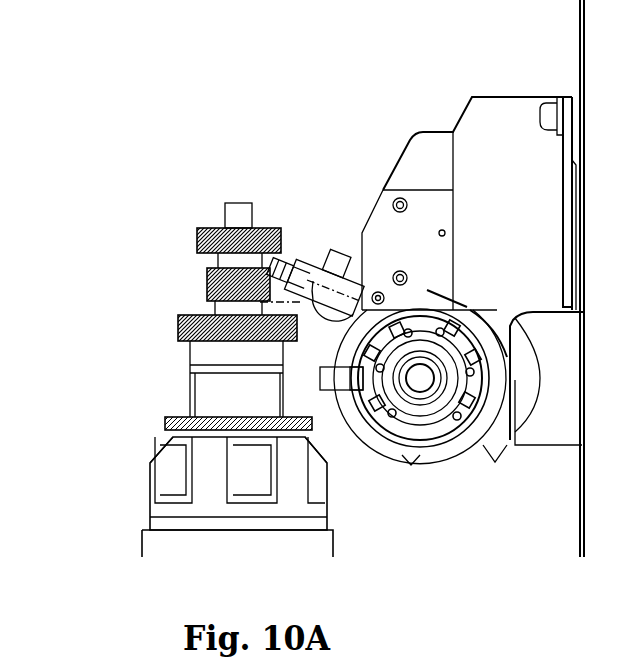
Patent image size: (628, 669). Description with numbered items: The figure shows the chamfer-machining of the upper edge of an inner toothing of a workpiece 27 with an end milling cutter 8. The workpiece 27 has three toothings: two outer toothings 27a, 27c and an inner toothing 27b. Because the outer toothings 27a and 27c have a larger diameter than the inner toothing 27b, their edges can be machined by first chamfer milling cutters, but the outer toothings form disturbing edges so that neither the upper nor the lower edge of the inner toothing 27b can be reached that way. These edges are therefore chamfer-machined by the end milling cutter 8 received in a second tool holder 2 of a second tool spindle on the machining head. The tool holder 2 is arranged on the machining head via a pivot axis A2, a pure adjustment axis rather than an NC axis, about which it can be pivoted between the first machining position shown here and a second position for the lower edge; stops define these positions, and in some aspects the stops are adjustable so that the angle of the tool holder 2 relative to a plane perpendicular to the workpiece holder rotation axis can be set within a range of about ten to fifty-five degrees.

The tool holder 2 is at (277, 270).
The end milling cutter 8 is at (268, 268).
The pivot axis A2 is at (372, 296).
The workpiece 27 is at (175, 380).
The outer toothing 27a is at (167, 326).
The inner toothing 27b is at (192, 286).
The outer toothing 27c is at (192, 238).